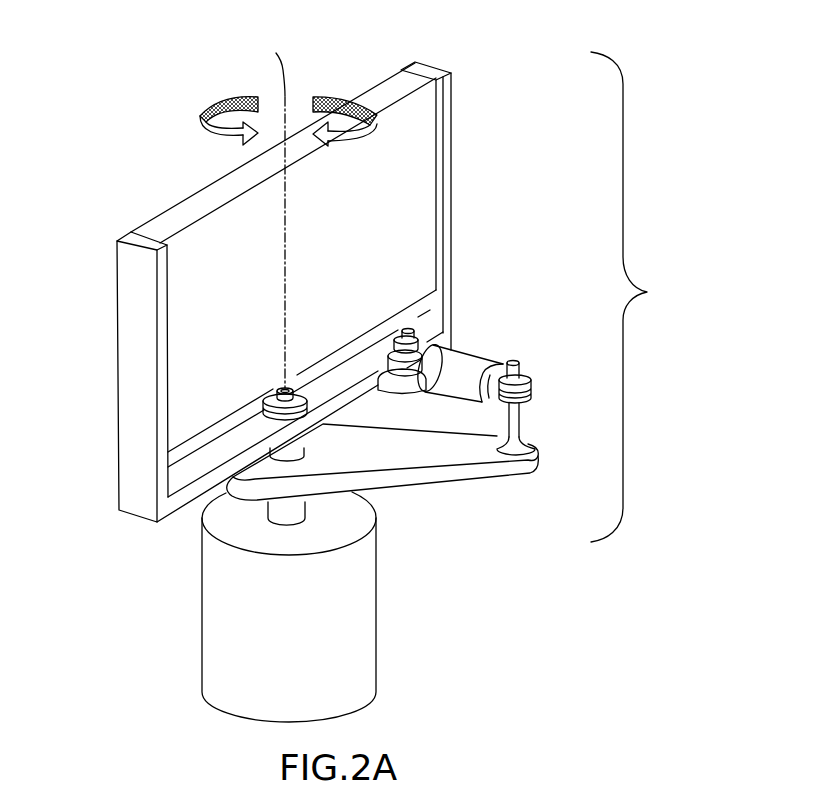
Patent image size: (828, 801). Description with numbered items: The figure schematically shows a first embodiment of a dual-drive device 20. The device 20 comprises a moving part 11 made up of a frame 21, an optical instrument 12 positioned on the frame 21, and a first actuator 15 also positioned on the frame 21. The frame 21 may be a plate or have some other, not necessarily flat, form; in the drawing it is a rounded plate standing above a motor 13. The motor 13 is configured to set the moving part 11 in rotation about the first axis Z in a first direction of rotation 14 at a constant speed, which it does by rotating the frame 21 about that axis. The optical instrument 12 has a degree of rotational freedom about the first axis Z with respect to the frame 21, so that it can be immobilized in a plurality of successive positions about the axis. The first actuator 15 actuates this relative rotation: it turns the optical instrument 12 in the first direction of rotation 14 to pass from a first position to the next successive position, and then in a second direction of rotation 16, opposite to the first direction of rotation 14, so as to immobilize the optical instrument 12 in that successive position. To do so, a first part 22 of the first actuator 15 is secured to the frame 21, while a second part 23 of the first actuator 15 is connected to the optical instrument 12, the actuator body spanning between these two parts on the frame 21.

The dual-drive device 20 is at (55, 215).
The moving part 11 is at (647, 292).
The optical instrument 12 is at (190, 213).
The motor 13 is at (202, 597).
The first direction of rotation 14 is at (198, 115).
The first actuator 15 is at (465, 363).
The second direction of rotation 16 is at (372, 118).
The frame 21 is at (430, 490).
The first part of the first actuator 22 is at (533, 390).
The second part of the first actuator 23 is at (410, 330).